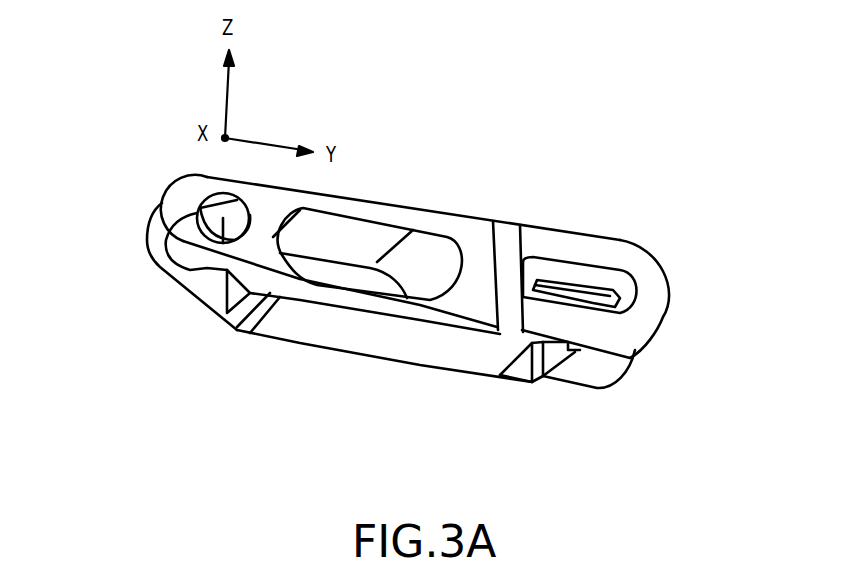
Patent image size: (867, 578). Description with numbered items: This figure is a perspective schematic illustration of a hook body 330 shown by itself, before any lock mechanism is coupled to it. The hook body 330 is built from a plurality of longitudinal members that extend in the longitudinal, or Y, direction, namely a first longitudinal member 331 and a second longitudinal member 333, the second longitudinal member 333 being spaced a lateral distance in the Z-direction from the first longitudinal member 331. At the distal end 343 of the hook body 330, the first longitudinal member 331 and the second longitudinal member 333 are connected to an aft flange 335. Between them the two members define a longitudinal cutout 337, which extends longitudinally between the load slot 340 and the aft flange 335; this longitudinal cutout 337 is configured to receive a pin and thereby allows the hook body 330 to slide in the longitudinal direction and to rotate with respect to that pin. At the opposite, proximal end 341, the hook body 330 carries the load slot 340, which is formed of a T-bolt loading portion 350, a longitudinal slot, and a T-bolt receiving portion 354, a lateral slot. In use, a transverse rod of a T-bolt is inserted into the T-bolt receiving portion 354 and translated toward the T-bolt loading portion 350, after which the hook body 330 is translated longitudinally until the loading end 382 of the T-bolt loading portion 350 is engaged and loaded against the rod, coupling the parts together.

The hook body 330 is at (472, 233).
The first longitudinal member 331 is at (377, 203).
The second longitudinal member 333 is at (402, 347).
The aft flange 335 is at (158, 233).
The longitudinal cutout 337 is at (322, 285).
The load slot 340 is at (575, 365).
The proximal end 341 is at (647, 253).
The distal end 343 is at (160, 268).
The T-bolt loading portion 350 is at (590, 267).
The T-bolt receiving portion 354 is at (523, 373).
The loading end 382 is at (637, 286).